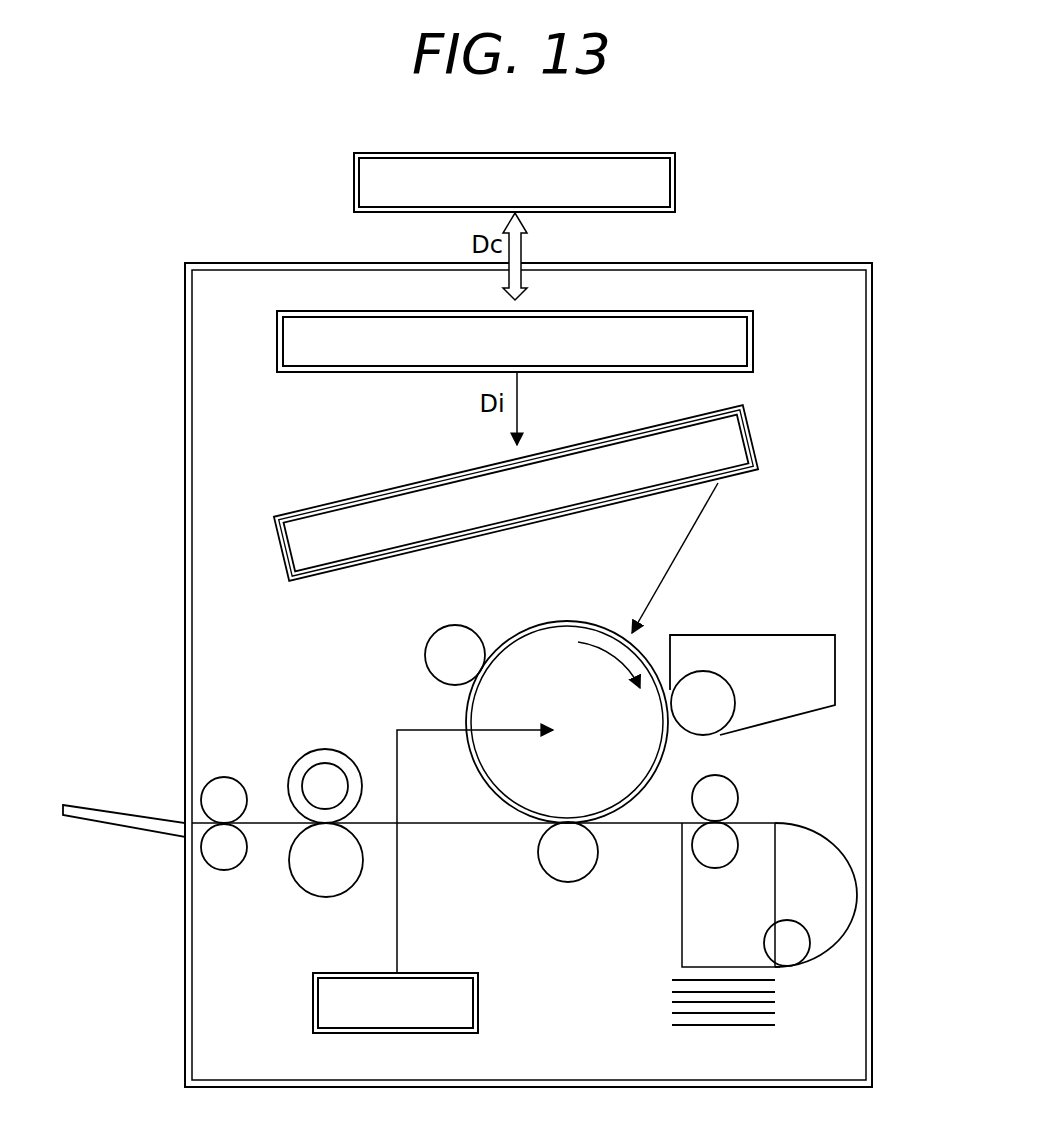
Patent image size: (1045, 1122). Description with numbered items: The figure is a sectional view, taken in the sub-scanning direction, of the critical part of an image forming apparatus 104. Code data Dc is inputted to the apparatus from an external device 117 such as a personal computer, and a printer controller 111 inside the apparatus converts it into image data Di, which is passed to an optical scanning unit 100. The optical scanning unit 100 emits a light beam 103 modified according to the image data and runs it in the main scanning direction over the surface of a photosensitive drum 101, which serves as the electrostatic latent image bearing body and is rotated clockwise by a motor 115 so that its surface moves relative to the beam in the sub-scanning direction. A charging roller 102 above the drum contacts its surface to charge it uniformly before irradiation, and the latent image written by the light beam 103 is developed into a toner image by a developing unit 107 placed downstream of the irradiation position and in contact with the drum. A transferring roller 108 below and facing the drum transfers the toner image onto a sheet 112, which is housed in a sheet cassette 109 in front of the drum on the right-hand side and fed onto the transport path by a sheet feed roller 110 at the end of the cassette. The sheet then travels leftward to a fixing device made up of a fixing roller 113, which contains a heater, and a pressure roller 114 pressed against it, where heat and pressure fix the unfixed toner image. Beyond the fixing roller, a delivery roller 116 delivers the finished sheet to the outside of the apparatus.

The optical scanning unit 100 is at (748, 417).
The photosensitive drum 101 is at (670, 750).
The charging roller 102 is at (432, 636).
The light beam 103 is at (700, 540).
The image forming apparatus 104 is at (838, 262).
The developing unit 107 is at (765, 633).
The transferring roller 108 is at (582, 882).
The sheet cassette 109 is at (665, 998).
The sheet feed roller 110 is at (770, 935).
The printer controller 111 is at (735, 310).
The sheet 112 is at (470, 826).
The fixing roller 113 is at (326, 750).
The pressure roller 114 is at (318, 896).
The motor 115 is at (450, 970).
The delivery roller 116 is at (224, 778).
The external device 117 is at (650, 153).